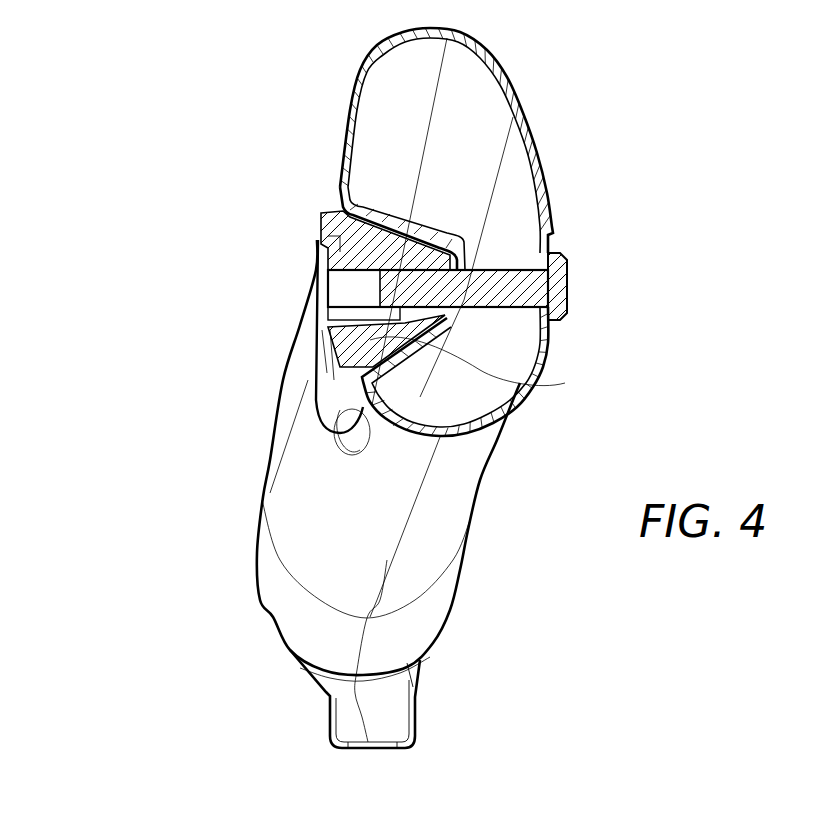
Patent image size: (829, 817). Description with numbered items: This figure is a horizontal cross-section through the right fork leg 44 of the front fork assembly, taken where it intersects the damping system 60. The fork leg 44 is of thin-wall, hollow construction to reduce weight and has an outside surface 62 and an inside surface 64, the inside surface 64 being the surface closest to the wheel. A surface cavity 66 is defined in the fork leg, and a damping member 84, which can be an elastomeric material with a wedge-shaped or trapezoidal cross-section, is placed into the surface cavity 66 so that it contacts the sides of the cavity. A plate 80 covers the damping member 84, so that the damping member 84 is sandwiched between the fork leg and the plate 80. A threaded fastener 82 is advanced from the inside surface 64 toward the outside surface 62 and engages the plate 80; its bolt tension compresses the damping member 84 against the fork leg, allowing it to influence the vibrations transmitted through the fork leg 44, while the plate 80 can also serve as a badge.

The right fork leg 44 is at (120, 258).
The damping system 60 is at (230, 237).
The outside surface 62 is at (343, 147).
The inside surface 64 is at (540, 142).
The surface cavity 66 is at (512, 398).
The plate 80 is at (320, 247).
The threaded fastener 82 is at (560, 290).
The damping member 84 is at (347, 343).